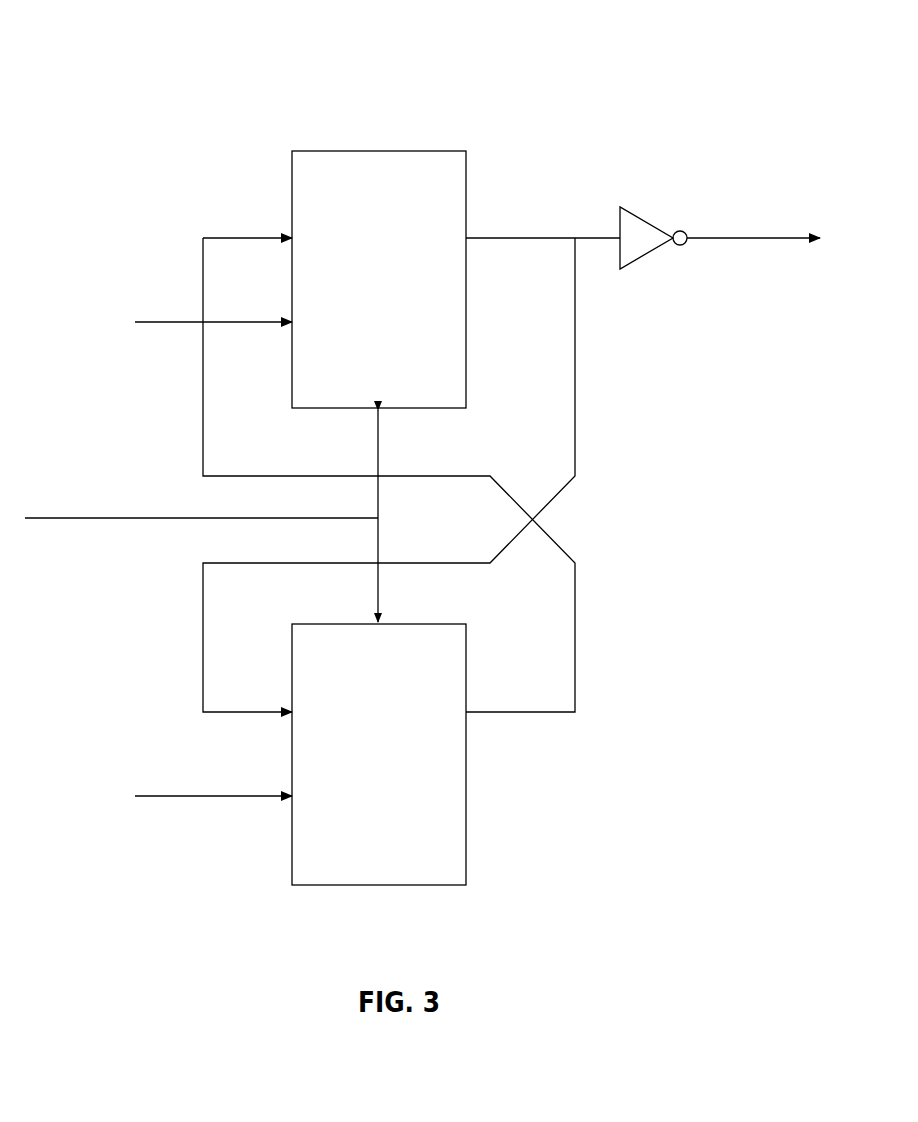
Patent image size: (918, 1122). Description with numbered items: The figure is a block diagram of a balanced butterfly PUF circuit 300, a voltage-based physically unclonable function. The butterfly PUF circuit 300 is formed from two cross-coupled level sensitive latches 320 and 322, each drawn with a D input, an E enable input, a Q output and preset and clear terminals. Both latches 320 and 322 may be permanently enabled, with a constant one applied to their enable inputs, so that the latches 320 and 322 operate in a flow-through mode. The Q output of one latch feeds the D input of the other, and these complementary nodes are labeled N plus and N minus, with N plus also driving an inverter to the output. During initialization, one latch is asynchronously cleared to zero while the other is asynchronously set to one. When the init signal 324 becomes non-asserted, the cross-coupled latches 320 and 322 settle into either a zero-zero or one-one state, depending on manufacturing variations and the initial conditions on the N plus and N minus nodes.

The balanced butterfly PUF circuit 300 is at (196, 60).
The level sensitive latch 320 is at (357, 150).
The level sensitive latch 322 is at (291, 858).
The init signal 324 is at (153, 519).